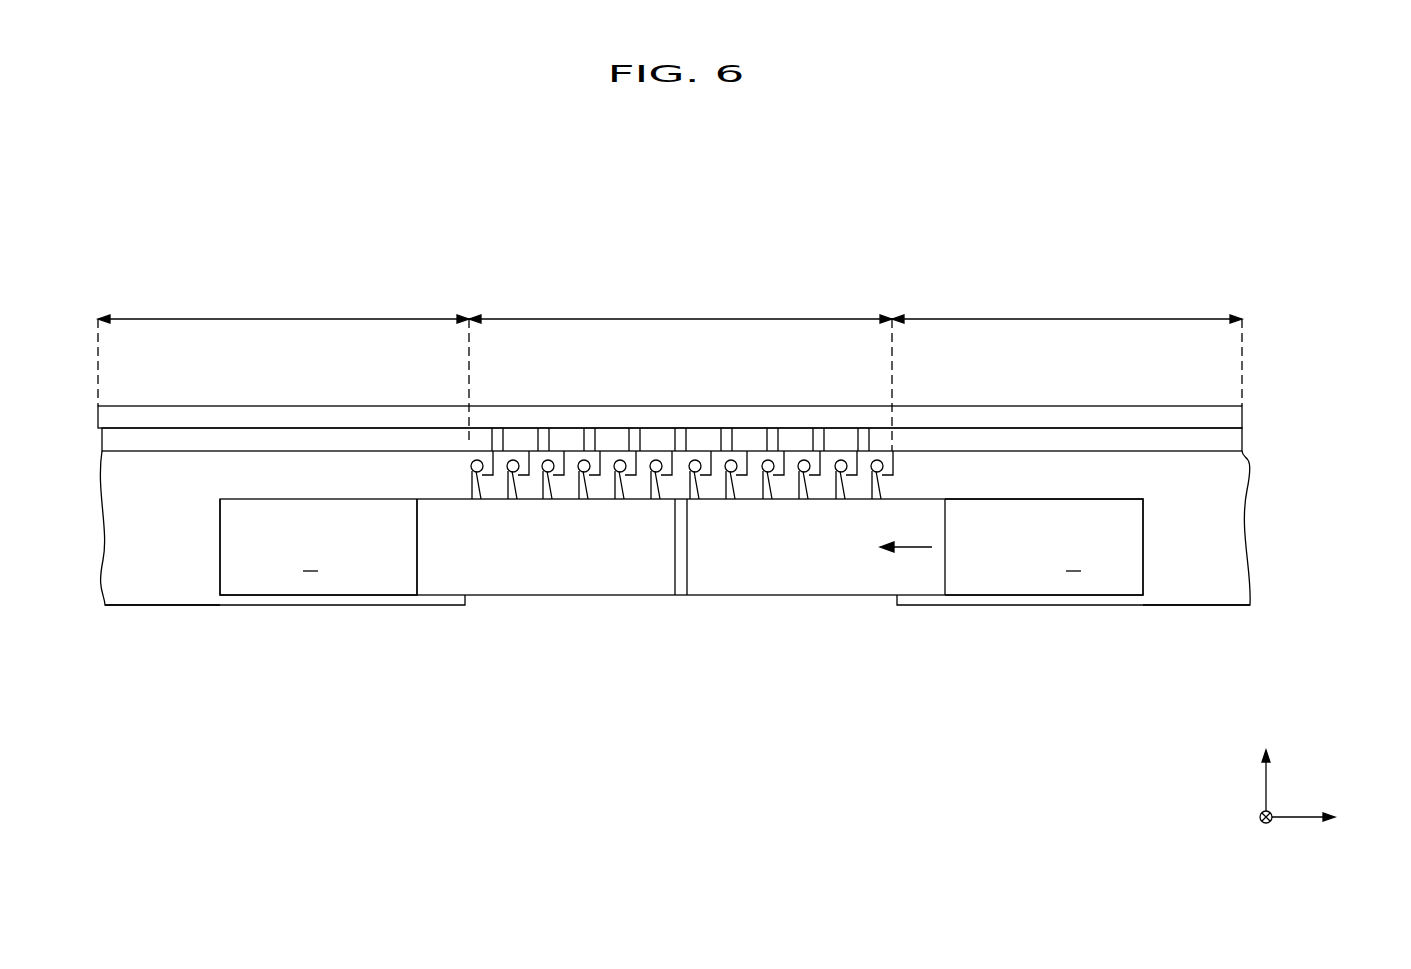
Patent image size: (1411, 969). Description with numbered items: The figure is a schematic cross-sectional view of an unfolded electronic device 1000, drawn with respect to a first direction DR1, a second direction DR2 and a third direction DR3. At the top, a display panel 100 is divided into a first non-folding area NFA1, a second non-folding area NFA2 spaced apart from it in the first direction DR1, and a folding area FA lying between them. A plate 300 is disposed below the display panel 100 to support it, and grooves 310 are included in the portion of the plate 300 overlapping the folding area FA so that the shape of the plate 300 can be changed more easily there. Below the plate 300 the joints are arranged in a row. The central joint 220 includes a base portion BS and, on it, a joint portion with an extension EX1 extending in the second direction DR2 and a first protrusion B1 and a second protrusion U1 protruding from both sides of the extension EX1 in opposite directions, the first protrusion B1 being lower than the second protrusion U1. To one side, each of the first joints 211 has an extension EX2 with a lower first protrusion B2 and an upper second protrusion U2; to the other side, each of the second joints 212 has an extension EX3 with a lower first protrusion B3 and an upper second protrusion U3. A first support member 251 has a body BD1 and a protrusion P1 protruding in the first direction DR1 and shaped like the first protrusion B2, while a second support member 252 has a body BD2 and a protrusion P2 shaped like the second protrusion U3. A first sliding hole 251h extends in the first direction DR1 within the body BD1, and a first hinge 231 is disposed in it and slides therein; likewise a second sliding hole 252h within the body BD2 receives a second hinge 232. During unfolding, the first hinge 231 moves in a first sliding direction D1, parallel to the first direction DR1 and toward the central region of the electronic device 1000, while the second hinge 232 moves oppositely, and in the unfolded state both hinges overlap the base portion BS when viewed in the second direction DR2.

The electronic device 1000 is at (1094, 242).
The display panel 100 is at (1228, 420).
The plate 300 is at (1228, 443).
The grooves 310 is at (682, 441).
The second joints 212 is at (553, 581).
The central joint 220 is at (708, 581).
The first joints 211 is at (846, 581).
The second support member 252 is at (178, 668).
The first support member 251 is at (1208, 668).
The second sliding hole 252h is at (308, 573).
The first sliding hole 251h is at (1072, 573).
The second hinge 232 is at (435, 582).
The first hinge 231 is at (922, 582).
The body BD2 is at (197, 591).
The body BD1 is at (1187, 592).
The first protrusion B3 is at (512, 472).
The extension EX3 is at (532, 468).
The second protrusion U3 is at (558, 458).
The first protrusion B1 is at (655, 472).
The base portion BS is at (682, 588).
The extension EX1 is at (682, 466).
The second protrusion U1 is at (705, 460).
The first protrusion B2 is at (804, 472).
The extension EX2 is at (827, 472).
The second protrusion U2 is at (851, 458).
The protrusion P2 is at (460, 483).
The protrusion P1 is at (885, 487).
The second non-folding area NFA2 is at (283, 349).
The folding area FA is at (680, 367).
The first non-folding area NFA1 is at (1067, 371).
The first sliding direction D1 is at (906, 533).
The first direction DR1 is at (1323, 817).
The second direction DR2 is at (1266, 830).
The third direction DR3 is at (1266, 766).